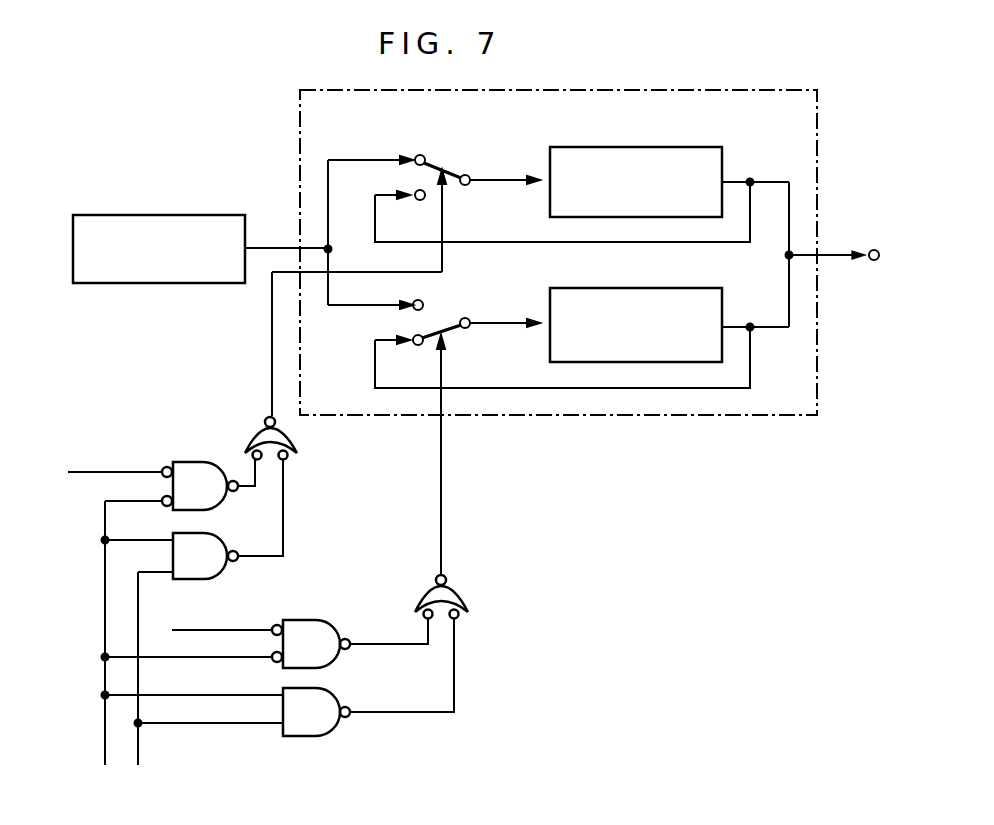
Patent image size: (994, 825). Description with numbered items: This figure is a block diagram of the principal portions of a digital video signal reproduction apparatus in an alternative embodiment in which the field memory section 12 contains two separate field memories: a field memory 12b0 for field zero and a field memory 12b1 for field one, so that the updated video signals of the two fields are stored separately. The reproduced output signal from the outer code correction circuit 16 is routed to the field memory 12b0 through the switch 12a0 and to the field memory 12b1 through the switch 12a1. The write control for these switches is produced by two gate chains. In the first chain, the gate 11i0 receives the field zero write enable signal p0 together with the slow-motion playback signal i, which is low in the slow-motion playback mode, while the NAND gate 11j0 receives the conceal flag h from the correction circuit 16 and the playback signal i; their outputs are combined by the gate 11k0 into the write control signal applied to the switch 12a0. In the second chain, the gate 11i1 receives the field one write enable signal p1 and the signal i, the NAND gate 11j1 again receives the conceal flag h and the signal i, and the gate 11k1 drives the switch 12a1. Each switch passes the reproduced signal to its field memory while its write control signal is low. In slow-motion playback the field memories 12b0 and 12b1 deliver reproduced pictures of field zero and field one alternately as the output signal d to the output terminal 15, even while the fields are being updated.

The field memory section 12 is at (789, 88).
The switch 12a0 is at (470, 137).
The switch 12a1 is at (444, 313).
The field memory 12b0 is at (649, 146).
The field memory 12b1 is at (646, 268).
The output terminal 15 is at (872, 262).
The outer code correction circuit 16 is at (93, 214).
The gate 11i0 is at (200, 461).
The NAND gate 11j0 is at (210, 580).
The gate 11k0 is at (297, 440).
The gate 11i1 is at (318, 620).
The NAND gate 11j1 is at (330, 737).
The gate 11k1 is at (468, 598).
The reproduced output signal d is at (831, 253).
The field 0 write enable signal p0 is at (103, 471).
The field 1 write enable signal p1 is at (205, 629).
The slow-motion playback signal i is at (103, 757).
The conceal flag h is at (140, 757).